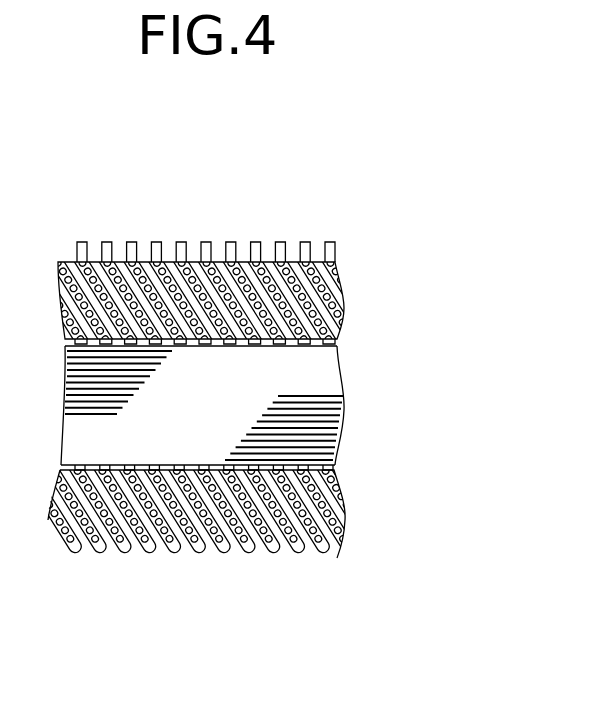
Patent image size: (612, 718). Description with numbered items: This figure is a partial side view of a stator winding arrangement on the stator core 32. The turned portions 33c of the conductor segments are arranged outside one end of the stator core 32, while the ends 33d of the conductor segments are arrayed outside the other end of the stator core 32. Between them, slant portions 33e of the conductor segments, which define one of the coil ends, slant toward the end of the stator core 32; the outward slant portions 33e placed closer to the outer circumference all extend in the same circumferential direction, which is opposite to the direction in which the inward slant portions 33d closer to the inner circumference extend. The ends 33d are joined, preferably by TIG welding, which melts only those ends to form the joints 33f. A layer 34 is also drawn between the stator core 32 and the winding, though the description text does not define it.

The joints 33f is at (206, 216).
The ends of the conductor segments 33d is at (206, 252).
The slant portions 33e is at (233, 262).
The bonding layer 34 is at (335, 339).
The stator core 32 is at (336, 368).
The turned portions 33c is at (322, 556).